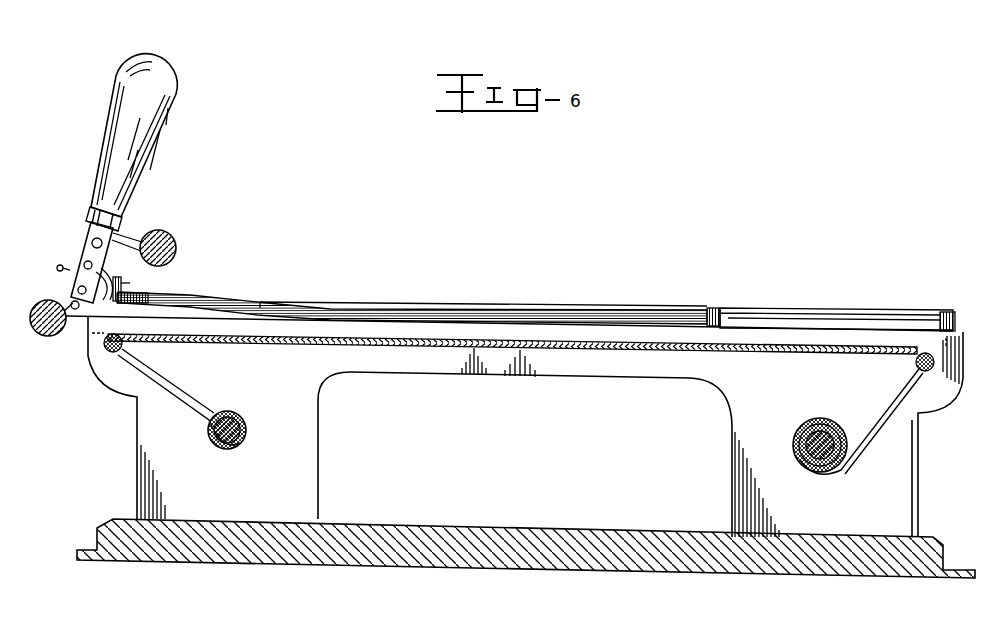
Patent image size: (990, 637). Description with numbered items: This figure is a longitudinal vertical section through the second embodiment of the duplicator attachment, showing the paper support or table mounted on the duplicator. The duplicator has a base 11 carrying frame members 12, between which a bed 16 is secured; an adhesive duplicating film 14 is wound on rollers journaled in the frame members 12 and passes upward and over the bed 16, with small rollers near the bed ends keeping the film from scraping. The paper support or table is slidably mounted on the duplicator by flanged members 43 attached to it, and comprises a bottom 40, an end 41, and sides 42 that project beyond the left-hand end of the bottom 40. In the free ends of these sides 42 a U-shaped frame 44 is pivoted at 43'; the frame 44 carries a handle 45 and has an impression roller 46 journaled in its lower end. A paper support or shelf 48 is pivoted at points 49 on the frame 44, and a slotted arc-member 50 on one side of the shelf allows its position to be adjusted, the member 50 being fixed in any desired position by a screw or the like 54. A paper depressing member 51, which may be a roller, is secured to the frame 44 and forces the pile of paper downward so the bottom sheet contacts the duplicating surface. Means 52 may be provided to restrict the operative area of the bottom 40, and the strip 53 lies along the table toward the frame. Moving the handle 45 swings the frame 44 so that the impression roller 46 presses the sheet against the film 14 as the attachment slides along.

The base 11 is at (221, 553).
The frame members 12 is at (146, 437).
The adhesive duplicating film 14 is at (876, 427).
The bed 16 is at (403, 346).
The bottom 40 is at (783, 323).
The end 41 is at (946, 313).
The sides 42 is at (838, 295).
The flanged members 43 is at (931, 343).
The pivot 43' is at (54, 294).
The U-shaped frame 44 is at (88, 251).
The handle 45 is at (100, 168).
The impression roller 46 is at (30, 317).
The paper support or shelf 48 is at (132, 301).
The pivot points 49 is at (57, 268).
The slotted arc-member 50 is at (112, 272).
The paper depressing member 51 is at (174, 239).
The means for restricting operative area 52 is at (707, 289).
The blade strip 53 is at (231, 307).
The screw 54 is at (83, 264).